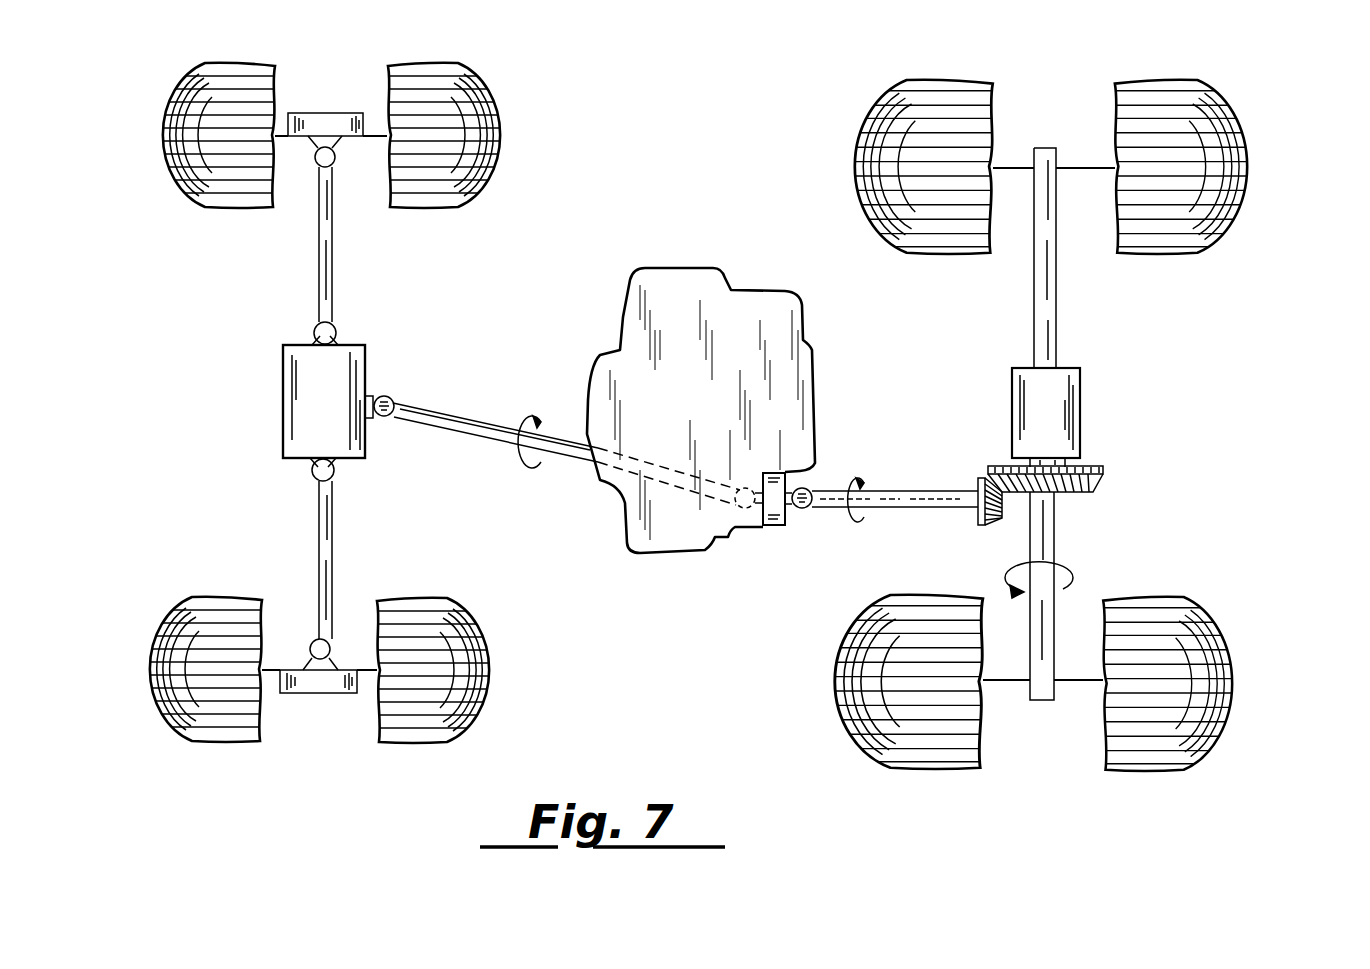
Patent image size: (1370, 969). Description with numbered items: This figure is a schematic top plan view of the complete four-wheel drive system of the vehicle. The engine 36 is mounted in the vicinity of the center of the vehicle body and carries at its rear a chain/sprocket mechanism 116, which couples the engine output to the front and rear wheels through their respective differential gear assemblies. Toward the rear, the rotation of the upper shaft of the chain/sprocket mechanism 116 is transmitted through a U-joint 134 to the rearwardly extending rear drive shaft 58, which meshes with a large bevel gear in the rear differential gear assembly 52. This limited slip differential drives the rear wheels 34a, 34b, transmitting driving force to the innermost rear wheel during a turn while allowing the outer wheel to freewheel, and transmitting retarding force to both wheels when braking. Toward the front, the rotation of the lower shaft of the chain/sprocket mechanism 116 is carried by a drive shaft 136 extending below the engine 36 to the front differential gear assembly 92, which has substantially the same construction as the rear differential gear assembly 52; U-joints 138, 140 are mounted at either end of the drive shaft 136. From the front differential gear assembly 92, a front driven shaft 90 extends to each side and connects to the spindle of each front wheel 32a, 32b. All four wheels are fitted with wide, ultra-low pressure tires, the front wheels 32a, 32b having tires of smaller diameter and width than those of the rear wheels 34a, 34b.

The front wheel 32a is at (165, 723).
The front wheel 32b is at (183, 83).
The rear wheel 34a is at (1213, 747).
The rear wheel 34b is at (1228, 104).
The engine 36 is at (682, 268).
The rear differential gear assembly 52 is at (1089, 432).
The rear drive shaft 58 is at (938, 488).
The front driven shaft 90 is at (318, 273).
The front differential gear assembly 92 is at (283, 393).
The chain/sprocket mechanism 116 is at (777, 527).
The U-joint 134 is at (808, 510).
The drive shaft 136 is at (459, 418).
The U-joint 138 is at (745, 512).
The U-joint 140 is at (385, 394).